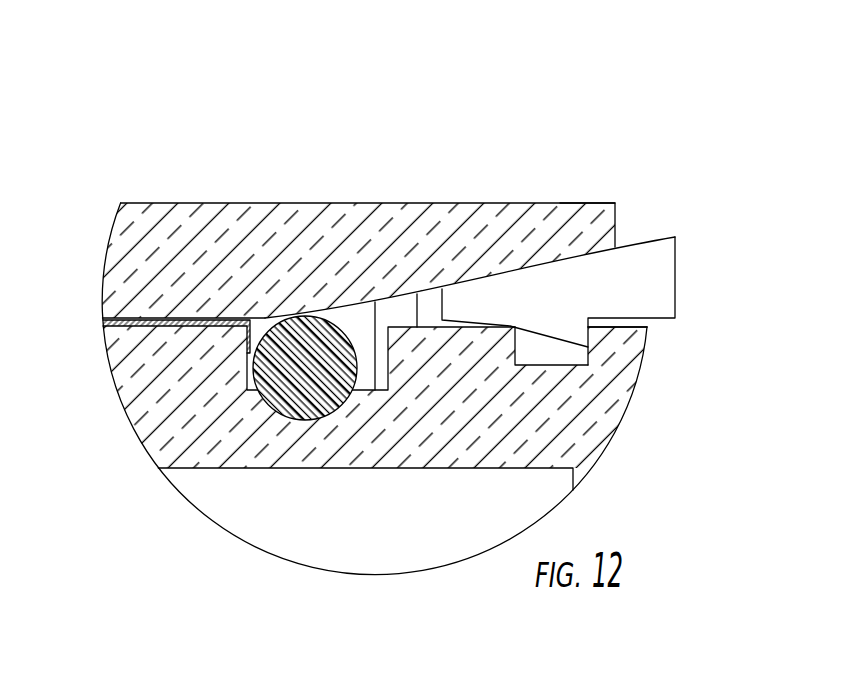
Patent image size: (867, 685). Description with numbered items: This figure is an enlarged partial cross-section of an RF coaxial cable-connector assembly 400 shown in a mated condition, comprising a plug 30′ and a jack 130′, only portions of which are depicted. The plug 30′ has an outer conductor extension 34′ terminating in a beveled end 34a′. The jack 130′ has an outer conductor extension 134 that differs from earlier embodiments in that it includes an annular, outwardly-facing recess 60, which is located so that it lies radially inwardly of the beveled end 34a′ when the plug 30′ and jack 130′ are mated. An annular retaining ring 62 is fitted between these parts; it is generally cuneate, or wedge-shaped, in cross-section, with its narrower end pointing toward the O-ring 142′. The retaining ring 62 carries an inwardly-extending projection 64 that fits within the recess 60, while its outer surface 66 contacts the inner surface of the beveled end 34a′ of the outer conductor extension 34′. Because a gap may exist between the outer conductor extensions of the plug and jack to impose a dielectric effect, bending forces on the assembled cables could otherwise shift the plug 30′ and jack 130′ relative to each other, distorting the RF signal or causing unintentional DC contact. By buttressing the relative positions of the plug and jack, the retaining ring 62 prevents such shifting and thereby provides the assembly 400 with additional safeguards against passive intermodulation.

The plug 30′ is at (188, 122).
The outer conductor extension 34′ is at (143, 226).
The beveled end 34a′ is at (522, 222).
The O-ring 142′ is at (307, 340).
The outer surface 66 is at (628, 247).
The RF coaxial cable-connector assembly 400 is at (682, 182).
The retaining ring 62 is at (657, 292).
The inwardly-extending projection 64 is at (573, 328).
The recess 60 is at (548, 352).
The jack 130′ is at (690, 412).
The outer conductor extension 134 is at (150, 441).